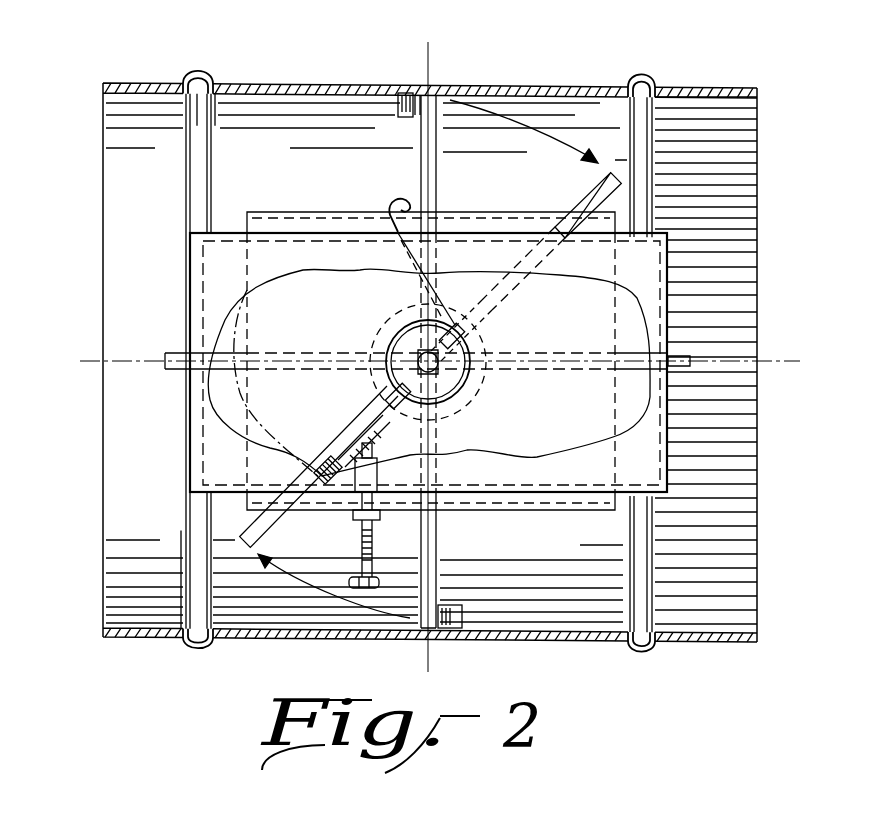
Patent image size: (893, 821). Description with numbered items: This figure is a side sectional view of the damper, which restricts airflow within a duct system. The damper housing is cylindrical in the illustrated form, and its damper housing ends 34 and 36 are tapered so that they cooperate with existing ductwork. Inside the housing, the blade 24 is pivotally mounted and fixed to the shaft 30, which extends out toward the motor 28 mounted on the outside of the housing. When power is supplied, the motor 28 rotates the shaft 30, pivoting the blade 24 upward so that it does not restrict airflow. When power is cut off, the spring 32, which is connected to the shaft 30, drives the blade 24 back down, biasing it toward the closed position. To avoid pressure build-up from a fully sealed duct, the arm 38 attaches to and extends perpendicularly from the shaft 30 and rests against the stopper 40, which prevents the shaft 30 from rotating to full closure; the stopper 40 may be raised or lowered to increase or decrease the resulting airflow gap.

The blade 24 is at (570, 180).
The motor 28 is at (270, 320).
The shaft 30 is at (470, 388).
The spring 32 is at (393, 200).
The damper housing end 34 is at (706, 88).
The damper housing end 36 is at (147, 83).
The arm 38 is at (318, 466).
The stopper 40 is at (347, 582).